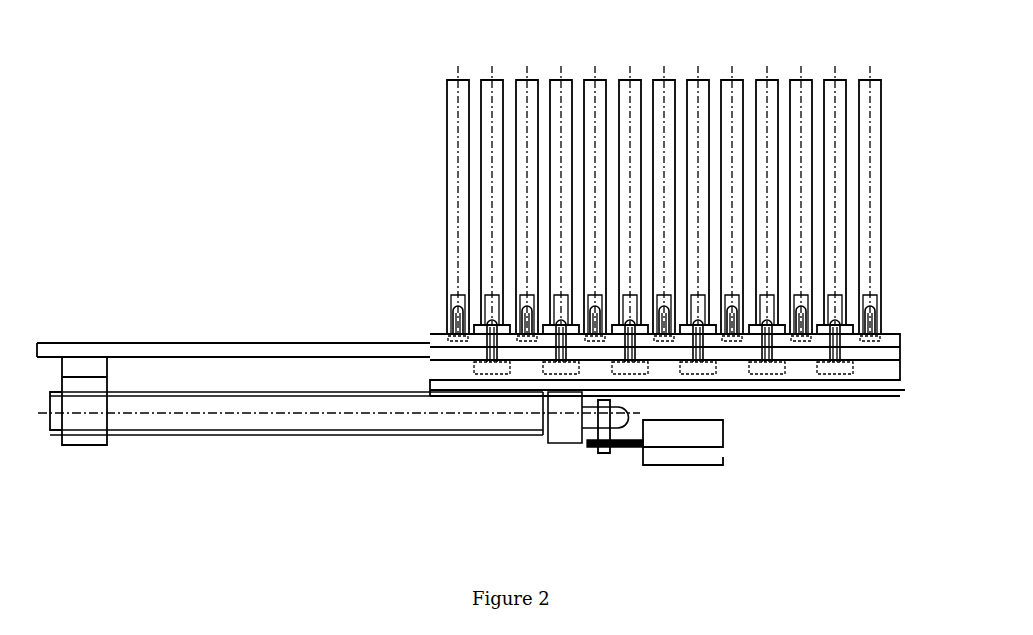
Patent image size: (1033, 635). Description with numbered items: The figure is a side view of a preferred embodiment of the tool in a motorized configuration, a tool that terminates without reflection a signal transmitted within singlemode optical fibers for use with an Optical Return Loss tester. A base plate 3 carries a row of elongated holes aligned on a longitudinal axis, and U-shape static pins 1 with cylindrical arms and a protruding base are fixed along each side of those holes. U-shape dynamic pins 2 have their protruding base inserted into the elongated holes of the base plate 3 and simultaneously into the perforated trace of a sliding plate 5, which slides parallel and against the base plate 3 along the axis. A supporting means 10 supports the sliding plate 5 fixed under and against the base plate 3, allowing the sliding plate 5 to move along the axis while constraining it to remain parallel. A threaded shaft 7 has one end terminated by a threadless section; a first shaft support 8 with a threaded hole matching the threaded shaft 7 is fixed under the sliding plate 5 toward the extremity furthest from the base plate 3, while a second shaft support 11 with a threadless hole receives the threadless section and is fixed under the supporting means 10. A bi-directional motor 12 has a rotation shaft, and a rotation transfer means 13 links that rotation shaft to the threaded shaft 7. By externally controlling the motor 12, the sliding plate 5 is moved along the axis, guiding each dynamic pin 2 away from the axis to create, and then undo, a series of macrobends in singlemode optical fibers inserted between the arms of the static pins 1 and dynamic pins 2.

The static pins 1 is at (871, 75).
The dynamic pins 2 is at (836, 75).
The base plate 3 is at (883, 340).
The sliding plate 5 is at (278, 357).
The threaded shaft 7 is at (278, 420).
The first shaft support 8 is at (83, 422).
The supporting means 10 is at (873, 384).
The second shaft support 11 is at (557, 430).
The bi-directional motor 12 is at (707, 447).
The rotation transfer means 13 is at (604, 450).